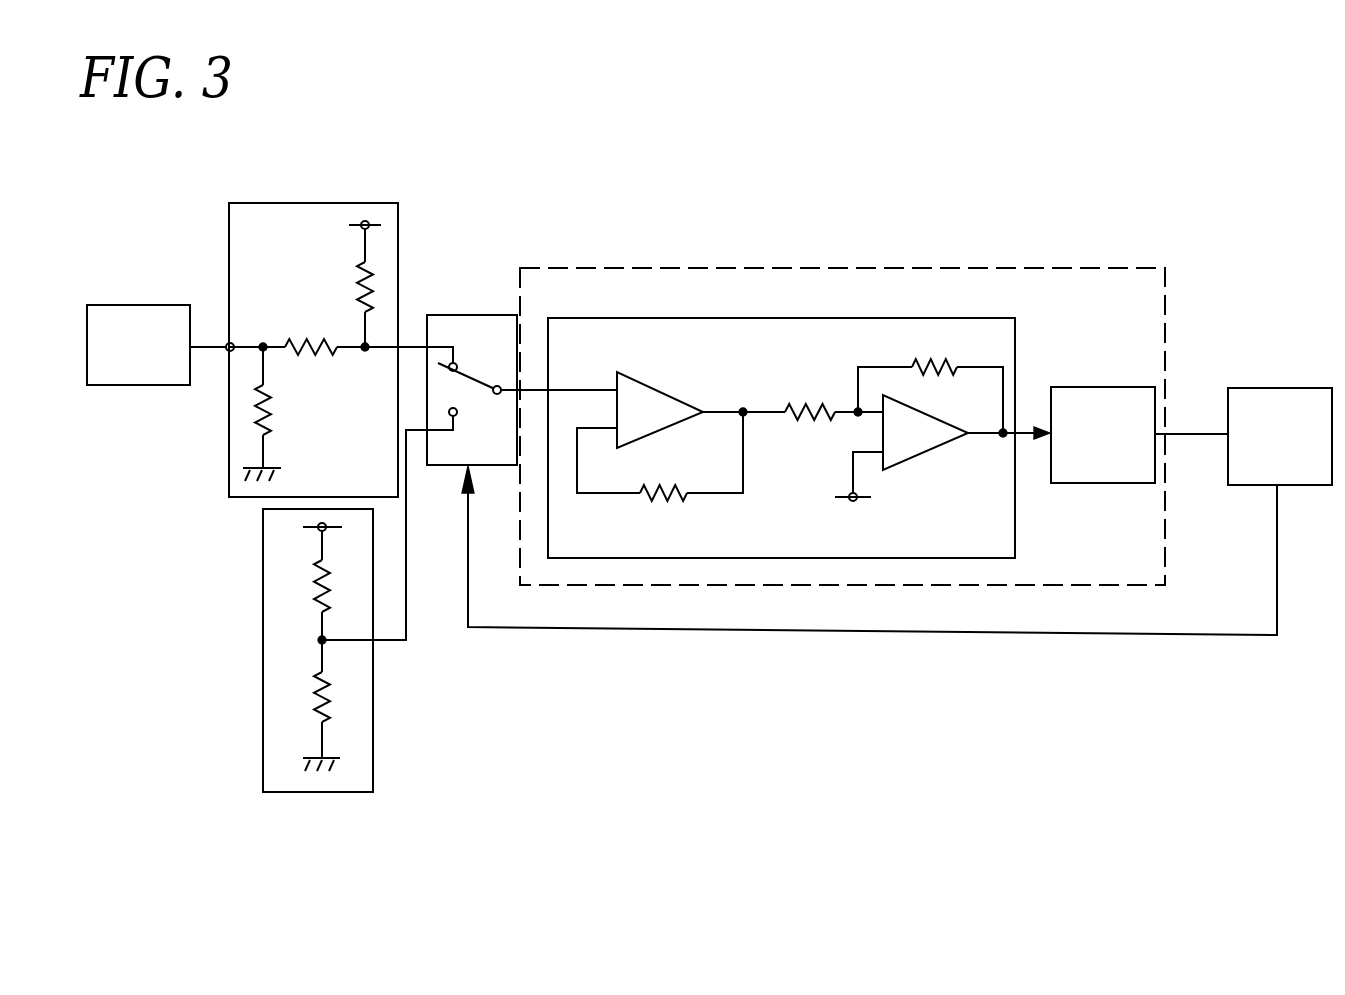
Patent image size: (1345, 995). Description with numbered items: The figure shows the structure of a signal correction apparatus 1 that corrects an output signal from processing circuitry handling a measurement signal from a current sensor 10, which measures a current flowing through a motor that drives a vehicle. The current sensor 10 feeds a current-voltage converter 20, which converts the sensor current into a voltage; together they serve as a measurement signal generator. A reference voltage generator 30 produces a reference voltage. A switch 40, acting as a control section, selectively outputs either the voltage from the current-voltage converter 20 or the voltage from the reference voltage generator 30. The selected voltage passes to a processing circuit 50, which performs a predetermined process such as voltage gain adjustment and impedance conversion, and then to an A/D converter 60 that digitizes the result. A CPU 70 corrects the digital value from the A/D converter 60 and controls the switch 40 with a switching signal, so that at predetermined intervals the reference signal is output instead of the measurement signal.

The signal correction apparatus 1 is at (786, 803).
The current sensor 10 is at (157, 385).
The current-voltage converter 20 is at (398, 243).
The reference voltage generator 30 is at (373, 740).
The switch 40 is at (483, 315).
The processing circuit 50 is at (863, 320).
The A/D converter 60 is at (1105, 387).
The CPU 70 is at (1288, 388).